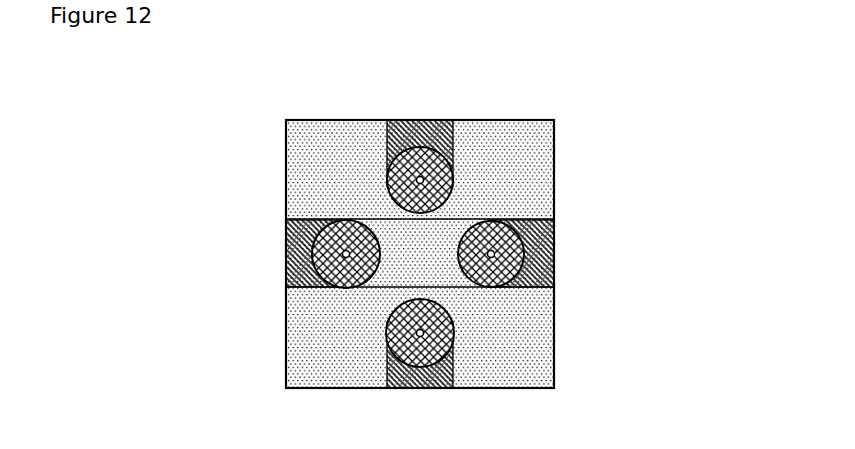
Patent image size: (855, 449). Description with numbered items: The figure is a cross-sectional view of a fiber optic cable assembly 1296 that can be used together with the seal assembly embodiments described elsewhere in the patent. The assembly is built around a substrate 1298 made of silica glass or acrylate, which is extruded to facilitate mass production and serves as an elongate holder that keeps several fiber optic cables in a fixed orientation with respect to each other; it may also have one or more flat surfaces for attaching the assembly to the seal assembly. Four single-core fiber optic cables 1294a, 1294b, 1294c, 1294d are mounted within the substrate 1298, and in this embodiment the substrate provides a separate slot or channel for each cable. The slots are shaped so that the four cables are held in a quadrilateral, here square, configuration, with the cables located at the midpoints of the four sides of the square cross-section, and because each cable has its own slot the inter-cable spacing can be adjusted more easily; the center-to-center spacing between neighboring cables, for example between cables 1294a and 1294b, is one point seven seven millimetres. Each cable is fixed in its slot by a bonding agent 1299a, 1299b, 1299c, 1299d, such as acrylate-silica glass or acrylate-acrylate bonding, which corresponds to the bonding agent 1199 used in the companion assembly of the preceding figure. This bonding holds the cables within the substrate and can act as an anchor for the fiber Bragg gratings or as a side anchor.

The bonding agent 1199 is at (490, 4).
The fiber optic cable assembly 1296 is at (362, 77).
The substrate 1298 is at (300, 157).
The bonding agent 1299a is at (453, 139).
The bonding agent 1299b is at (554, 283).
The bonding agent 1299c is at (416, 388).
The bonding agent 1299d is at (287, 228).
The single-core fiber optic cable 1294a is at (423, 180).
The single-core fiber optic cable 1294b is at (494, 254).
The single-core fiber optic cable 1294c is at (417, 333).
The single-core fiber optic cable 1294d is at (343, 254).